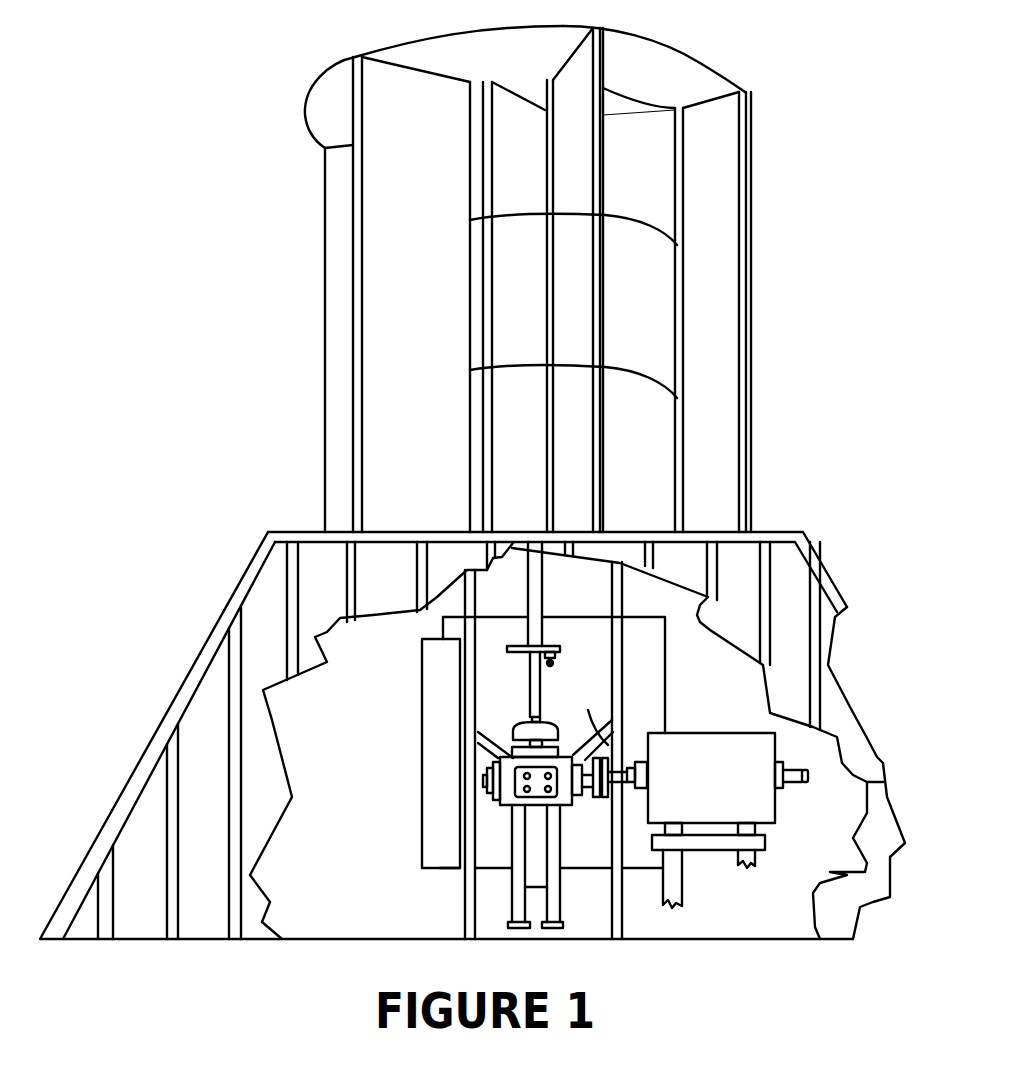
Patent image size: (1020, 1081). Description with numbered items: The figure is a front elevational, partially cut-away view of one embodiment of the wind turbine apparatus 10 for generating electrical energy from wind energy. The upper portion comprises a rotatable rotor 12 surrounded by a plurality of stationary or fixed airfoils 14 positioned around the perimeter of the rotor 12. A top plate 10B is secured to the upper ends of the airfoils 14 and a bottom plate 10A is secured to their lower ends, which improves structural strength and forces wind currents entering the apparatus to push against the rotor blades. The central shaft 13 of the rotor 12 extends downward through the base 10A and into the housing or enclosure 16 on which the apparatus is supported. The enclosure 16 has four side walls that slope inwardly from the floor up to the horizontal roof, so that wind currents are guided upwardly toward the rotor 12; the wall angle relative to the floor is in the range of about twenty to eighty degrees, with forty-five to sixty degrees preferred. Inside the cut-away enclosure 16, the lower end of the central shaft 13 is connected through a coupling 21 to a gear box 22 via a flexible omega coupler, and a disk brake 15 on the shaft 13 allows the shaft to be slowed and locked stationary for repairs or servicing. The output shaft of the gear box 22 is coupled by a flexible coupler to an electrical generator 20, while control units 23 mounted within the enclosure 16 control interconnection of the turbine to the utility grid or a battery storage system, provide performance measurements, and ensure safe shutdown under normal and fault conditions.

The wind turbine apparatus 10 is at (772, 113).
The bottom plate 10A is at (772, 531).
The top plate 10B is at (315, 88).
The rotor 12 is at (503, 398).
The central shaft 13 is at (541, 600).
The airfoils 14 is at (352, 163).
The disk brake 15 is at (553, 649).
The enclosure 16 is at (268, 531).
The electrical generator 20 is at (735, 795).
The coupling 21 is at (545, 722).
The gear box 22 is at (483, 781).
The control units 23 is at (447, 620).